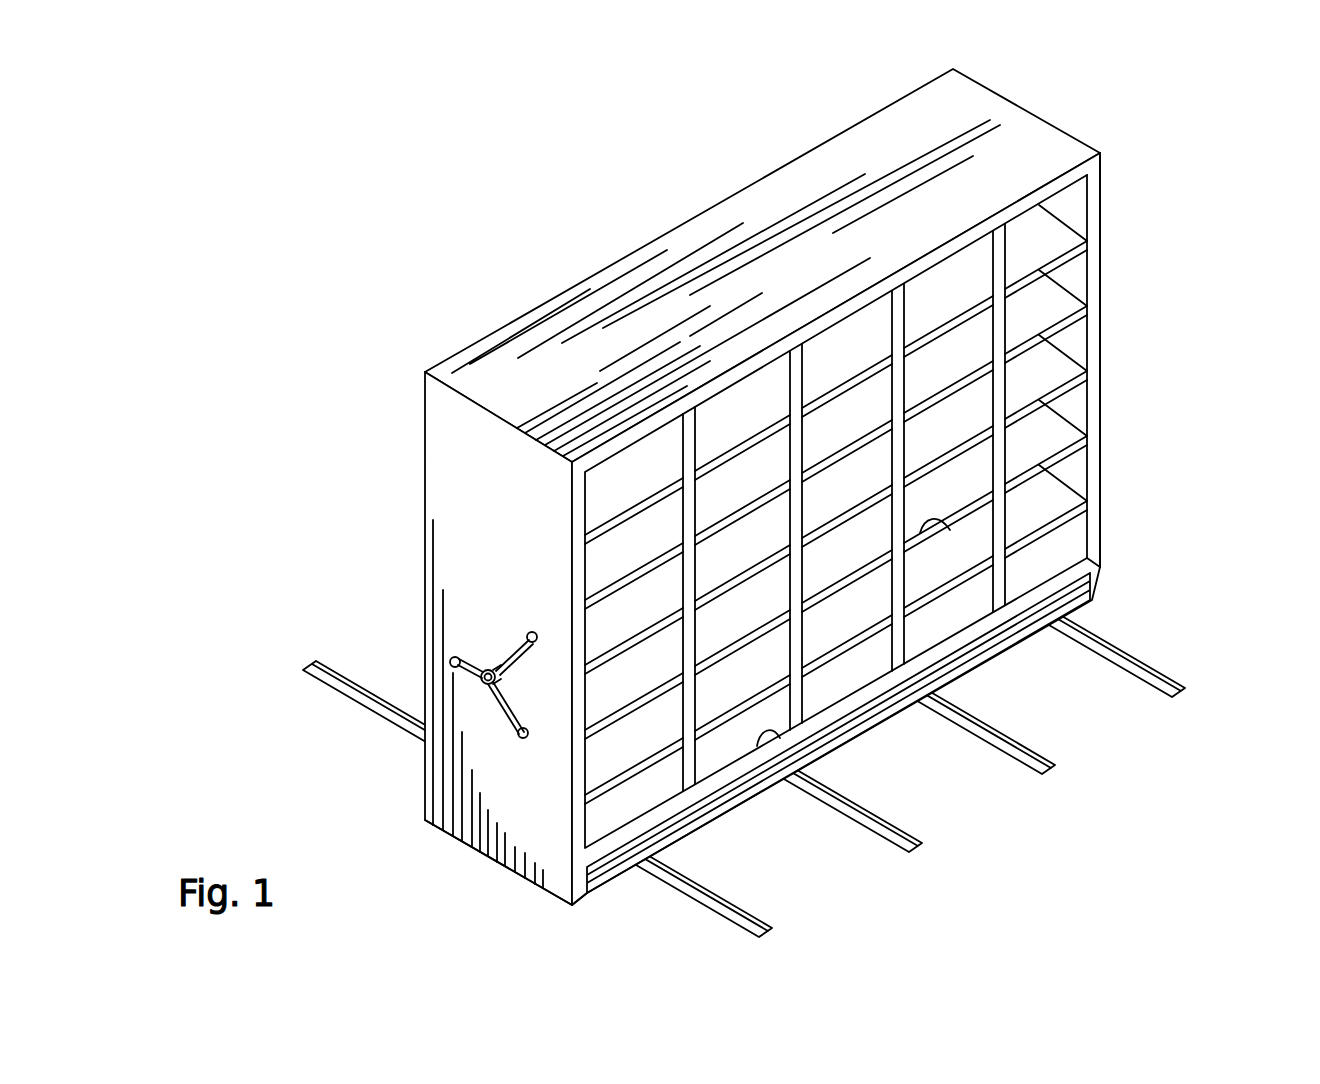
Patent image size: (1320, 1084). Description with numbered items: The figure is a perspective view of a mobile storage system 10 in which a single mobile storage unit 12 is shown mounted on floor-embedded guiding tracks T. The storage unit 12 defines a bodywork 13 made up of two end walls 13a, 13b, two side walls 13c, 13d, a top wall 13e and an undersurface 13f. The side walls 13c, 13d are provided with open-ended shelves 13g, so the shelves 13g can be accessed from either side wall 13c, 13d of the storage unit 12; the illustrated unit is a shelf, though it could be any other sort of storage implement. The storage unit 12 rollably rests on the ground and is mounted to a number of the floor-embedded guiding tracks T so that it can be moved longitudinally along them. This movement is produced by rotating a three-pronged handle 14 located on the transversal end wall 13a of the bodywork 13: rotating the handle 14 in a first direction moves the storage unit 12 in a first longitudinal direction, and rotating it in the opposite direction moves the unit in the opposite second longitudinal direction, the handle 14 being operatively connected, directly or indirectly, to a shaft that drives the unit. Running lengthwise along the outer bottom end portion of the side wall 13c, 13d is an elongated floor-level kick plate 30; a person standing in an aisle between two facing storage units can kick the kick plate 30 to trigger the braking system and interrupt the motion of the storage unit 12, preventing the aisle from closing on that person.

The mobile storage system 10 is at (511, 206).
The mobile storage unit 12 is at (815, 162).
The bodywork 13 is at (1003, 158).
The end wall 13a is at (437, 431).
The end wall 13b is at (1100, 347).
The side wall 13c is at (692, 708).
The side wall 13d is at (435, 525).
The top wall 13e is at (533, 362).
The undersurface 13f is at (497, 865).
The open-ended shelves 13g is at (922, 532).
The three-pronged handle 14 is at (462, 655).
The kick plate 30 is at (1093, 588).
The floor-embedded guiding tracks T is at (1043, 742).